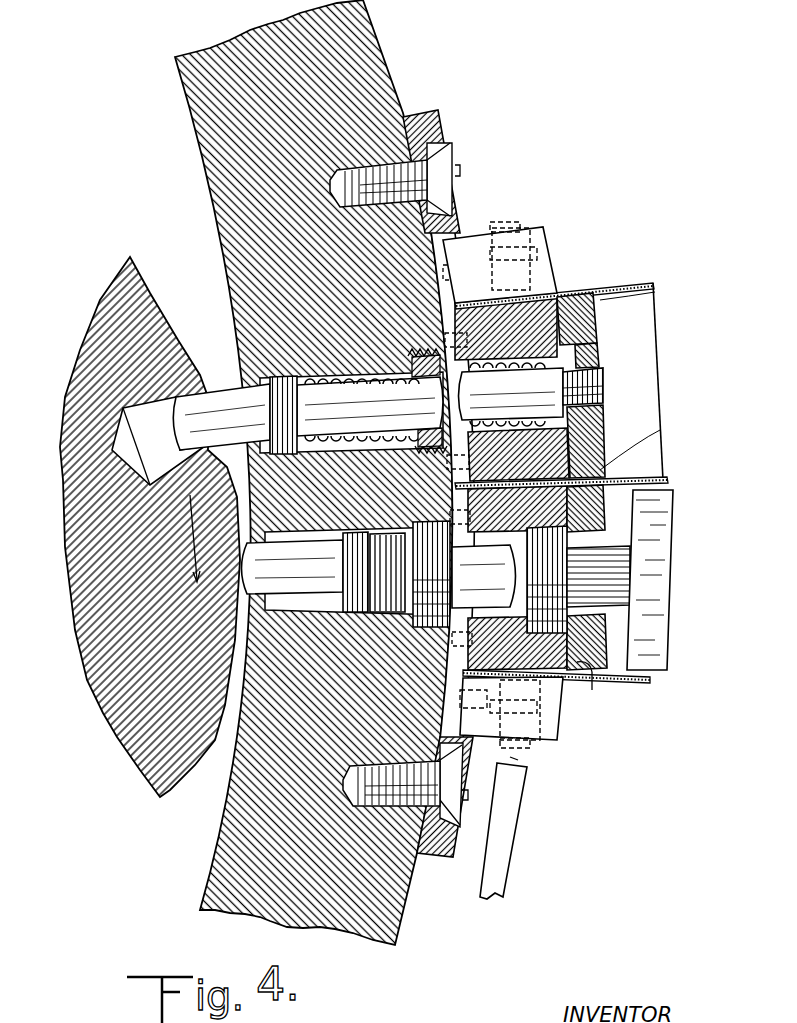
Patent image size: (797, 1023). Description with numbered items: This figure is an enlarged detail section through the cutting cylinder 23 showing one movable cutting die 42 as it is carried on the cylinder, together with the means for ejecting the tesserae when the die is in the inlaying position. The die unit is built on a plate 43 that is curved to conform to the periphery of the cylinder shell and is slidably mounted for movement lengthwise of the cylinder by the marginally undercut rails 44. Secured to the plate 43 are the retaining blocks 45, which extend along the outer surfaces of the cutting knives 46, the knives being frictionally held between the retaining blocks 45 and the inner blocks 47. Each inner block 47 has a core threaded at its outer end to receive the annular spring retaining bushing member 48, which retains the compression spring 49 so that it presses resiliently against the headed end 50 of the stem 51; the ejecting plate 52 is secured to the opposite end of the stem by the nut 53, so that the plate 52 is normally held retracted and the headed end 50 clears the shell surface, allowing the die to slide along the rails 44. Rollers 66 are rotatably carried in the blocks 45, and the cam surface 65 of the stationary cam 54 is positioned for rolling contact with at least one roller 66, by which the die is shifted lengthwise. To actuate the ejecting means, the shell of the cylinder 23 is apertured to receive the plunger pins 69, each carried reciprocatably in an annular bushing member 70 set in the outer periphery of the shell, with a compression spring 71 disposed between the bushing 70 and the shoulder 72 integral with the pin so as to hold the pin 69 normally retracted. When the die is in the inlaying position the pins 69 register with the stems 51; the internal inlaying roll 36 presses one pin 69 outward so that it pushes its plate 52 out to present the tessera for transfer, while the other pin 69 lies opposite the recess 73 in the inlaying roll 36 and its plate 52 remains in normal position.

The cutting cylinder 23 is at (203, 60).
The internal inlaying roll 36 is at (118, 312).
The recess 73 is at (150, 407).
The plunger pin 69 is at (235, 400).
The shoulder 72 is at (283, 378).
The compression spring 71 is at (340, 383).
The annular bushing member 70 is at (418, 355).
The marginally undercut rails 44 is at (447, 115).
The movable cutting die 42 is at (568, 285).
The plate 43 is at (440, 708).
The cutting knives 46 is at (620, 282).
The annular spring retaining bushing member 48 is at (600, 333).
The nut 53 is at (600, 358).
The compression spring 49 is at (605, 430).
The headed end 50 is at (470, 390).
The stem 51 is at (603, 398).
The plate 52 is at (600, 313).
The retaining blocks 45 is at (545, 237).
The rollers 66 is at (512, 226).
The inner blocks 47 is at (592, 690).
The cam surface 65 is at (510, 757).
The cam 54 is at (498, 868).